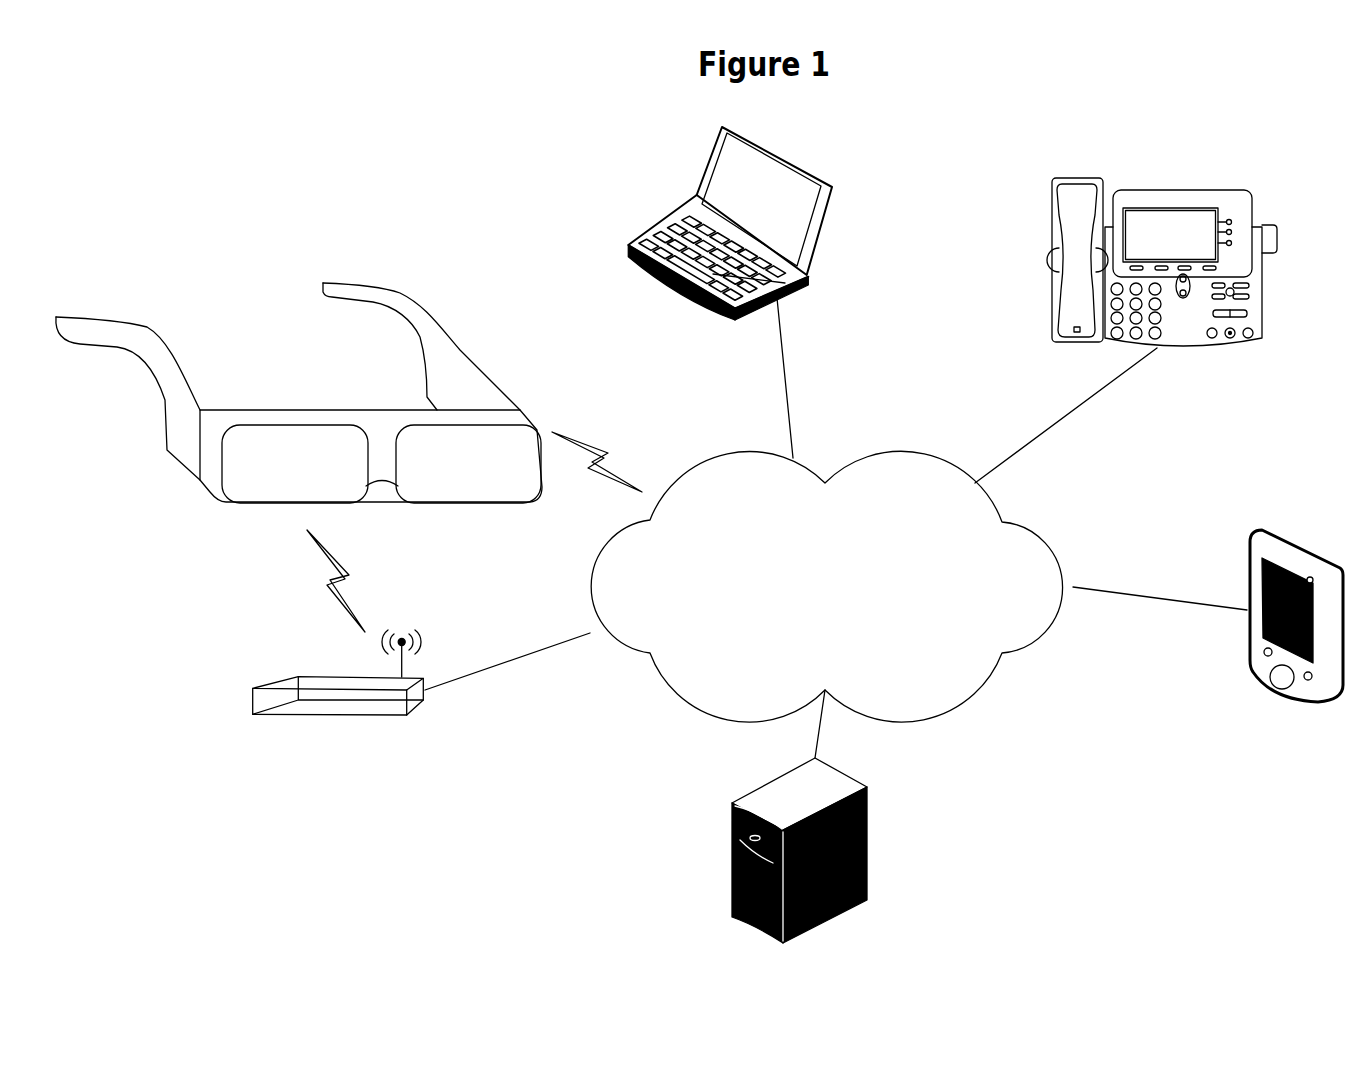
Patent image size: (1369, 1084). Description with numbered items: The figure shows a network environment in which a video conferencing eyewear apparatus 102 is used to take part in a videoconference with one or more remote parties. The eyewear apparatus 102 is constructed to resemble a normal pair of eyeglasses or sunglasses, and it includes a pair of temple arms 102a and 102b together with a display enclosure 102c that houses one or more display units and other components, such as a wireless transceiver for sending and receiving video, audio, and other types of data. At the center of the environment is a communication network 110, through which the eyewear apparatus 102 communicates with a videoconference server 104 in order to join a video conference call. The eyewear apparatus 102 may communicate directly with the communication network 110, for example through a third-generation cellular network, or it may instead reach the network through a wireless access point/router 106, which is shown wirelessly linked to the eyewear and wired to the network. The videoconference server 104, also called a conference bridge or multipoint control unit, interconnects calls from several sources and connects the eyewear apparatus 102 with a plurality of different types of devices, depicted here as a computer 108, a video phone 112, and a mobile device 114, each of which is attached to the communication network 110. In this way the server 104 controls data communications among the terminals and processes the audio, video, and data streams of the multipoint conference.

The video conferencing eyewear apparatus 102 is at (107, 298).
The temple arm 102a is at (183, 382).
The temple arm 102b is at (422, 370).
The display enclosure 102c is at (323, 408).
The videoconference server 104 is at (738, 797).
The wireless access point/router 106 is at (270, 680).
The computer 108 is at (712, 135).
The communication network 110 is at (806, 618).
The video phone 112 is at (1175, 183).
The mobile device 114 is at (1258, 528).